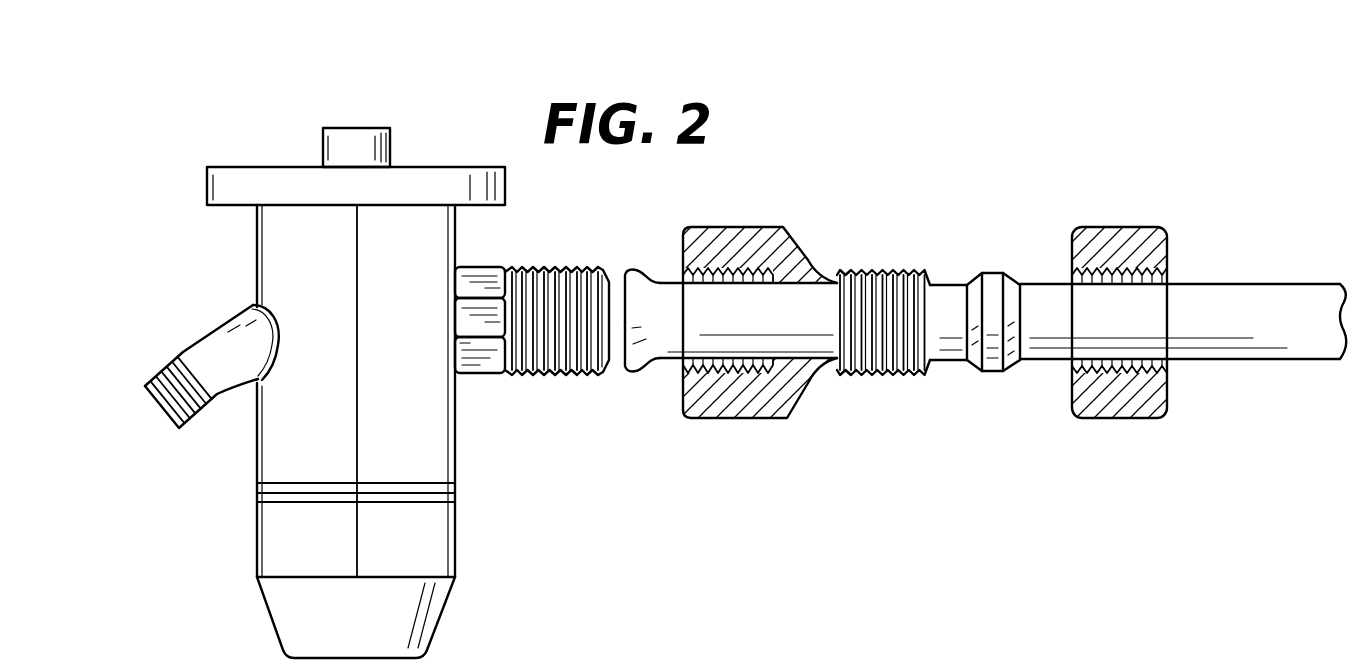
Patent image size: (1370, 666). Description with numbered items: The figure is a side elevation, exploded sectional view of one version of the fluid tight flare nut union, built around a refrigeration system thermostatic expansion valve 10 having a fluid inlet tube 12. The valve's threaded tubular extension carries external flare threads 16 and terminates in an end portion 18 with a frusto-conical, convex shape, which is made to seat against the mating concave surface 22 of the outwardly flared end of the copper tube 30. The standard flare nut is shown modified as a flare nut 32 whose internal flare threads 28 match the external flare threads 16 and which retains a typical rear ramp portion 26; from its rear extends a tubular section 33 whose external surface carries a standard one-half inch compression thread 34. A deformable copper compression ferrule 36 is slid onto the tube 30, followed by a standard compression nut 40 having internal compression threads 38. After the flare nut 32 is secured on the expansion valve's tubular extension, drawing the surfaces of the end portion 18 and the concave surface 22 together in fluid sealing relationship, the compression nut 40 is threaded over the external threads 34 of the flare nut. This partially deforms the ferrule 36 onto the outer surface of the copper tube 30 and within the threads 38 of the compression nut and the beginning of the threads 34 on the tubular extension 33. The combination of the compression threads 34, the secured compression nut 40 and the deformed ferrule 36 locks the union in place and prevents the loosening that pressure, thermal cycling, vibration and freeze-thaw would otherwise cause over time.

The thermostatic expansion valve 10 is at (241, 166).
The fluid inlet tube 12 is at (181, 431).
The external flare threads 16 is at (533, 378).
The end portion of the threaded tubular extension 18 is at (618, 297).
The mating concave surface 22 is at (615, 364).
The rear ramp portion 26 is at (813, 255).
The internal flare threads 28 is at (748, 368).
The copper tube 30 is at (1263, 277).
The modified flare nut 32 is at (744, 222).
The tubular section 33 is at (884, 267).
The compression thread 34 is at (880, 378).
The compression ferrule 36 is at (994, 264).
The internal compression threads 38 is at (1118, 371).
The compression nut 40 is at (1133, 222).